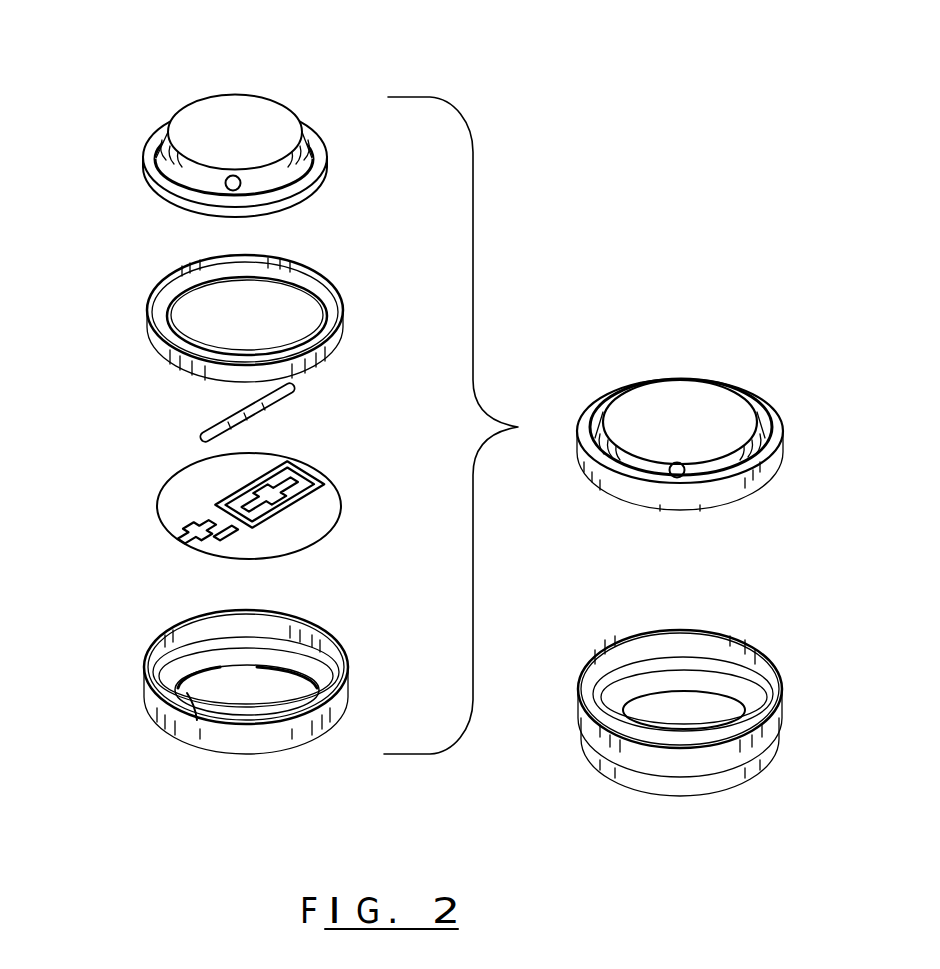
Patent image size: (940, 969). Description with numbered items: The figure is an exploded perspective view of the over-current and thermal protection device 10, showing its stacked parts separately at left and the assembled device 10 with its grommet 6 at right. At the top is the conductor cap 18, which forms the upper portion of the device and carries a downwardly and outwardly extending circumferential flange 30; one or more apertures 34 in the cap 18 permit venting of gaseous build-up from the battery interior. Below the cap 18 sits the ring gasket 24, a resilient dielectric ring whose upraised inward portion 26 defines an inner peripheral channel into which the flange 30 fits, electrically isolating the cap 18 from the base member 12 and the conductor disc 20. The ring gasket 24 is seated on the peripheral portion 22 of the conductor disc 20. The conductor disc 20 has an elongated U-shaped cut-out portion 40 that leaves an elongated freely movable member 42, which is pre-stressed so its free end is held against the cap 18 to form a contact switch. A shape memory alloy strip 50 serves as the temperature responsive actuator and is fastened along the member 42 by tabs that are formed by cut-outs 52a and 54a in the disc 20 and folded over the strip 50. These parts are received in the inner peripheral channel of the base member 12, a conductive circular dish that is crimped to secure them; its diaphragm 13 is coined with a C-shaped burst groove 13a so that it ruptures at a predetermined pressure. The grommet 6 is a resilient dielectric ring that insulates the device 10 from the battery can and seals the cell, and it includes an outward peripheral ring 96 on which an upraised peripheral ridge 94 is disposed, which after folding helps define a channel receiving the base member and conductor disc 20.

The grommet 6 is at (750, 747).
The over-current and thermal protection device 10 is at (782, 410).
The base member 12 is at (287, 738).
The diaphragm 13 is at (240, 698).
The burst groove 13a is at (195, 718).
The conductor cap 18 is at (238, 118).
The conductor disc 20 is at (333, 510).
The peripheral portion 22 is at (197, 482).
The ring gasket 24 is at (343, 317).
The upraised inward portion 26 is at (337, 285).
The circumferential flange 30 is at (317, 173).
The aperture 34 is at (235, 190).
The cut-out portion 40 is at (270, 525).
The elongated freely movable member 42 is at (298, 478).
The shape memory alloy strip 50 is at (263, 413).
The cut-out 52a is at (227, 540).
The cut-out 54a is at (183, 540).
The upraised peripheral ridge 94 is at (767, 697).
The outward peripheral ring 96 is at (762, 650).